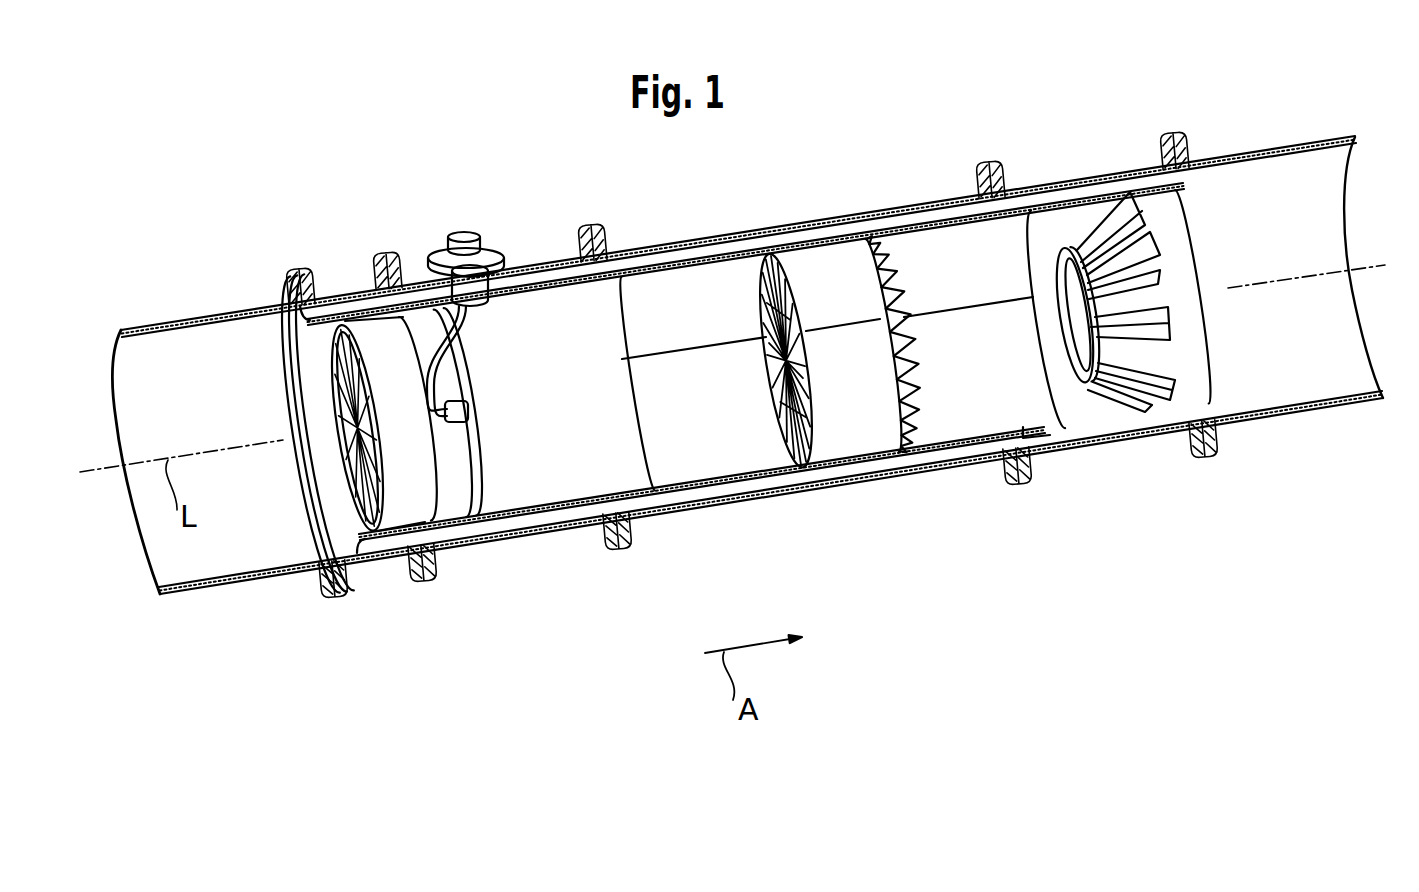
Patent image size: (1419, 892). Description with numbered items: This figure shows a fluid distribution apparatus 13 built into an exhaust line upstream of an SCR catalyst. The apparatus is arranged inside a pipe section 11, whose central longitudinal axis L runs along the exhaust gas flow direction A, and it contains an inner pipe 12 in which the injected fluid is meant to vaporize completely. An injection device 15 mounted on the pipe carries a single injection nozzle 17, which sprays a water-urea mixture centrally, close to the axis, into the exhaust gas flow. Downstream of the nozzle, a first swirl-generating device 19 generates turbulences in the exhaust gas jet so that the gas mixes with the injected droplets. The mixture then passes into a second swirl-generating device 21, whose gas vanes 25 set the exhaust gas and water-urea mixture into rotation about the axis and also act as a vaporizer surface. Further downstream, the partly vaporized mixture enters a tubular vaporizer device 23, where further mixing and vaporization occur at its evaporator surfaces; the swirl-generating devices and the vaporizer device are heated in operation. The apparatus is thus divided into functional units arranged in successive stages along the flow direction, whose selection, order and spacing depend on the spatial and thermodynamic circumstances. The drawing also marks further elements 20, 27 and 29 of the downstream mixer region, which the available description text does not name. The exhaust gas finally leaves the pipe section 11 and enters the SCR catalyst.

The pipe section 11 is at (682, 242).
The inner pipe 12 is at (772, 251).
The fluid distribution apparatus 13 is at (402, 217).
The injection device 15 is at (468, 233).
The injection nozzle 17 is at (480, 409).
The first swirl-generating device 19 is at (399, 516).
The mixing device 20 is at (1096, 283).
The second swirl-generating device 21 is at (856, 444).
The tubular vaporizer device 23 is at (1075, 313).
The gas vanes 25 is at (341, 412).
The hub ring 27 is at (1048, 331).
The vane 29 is at (1113, 232).